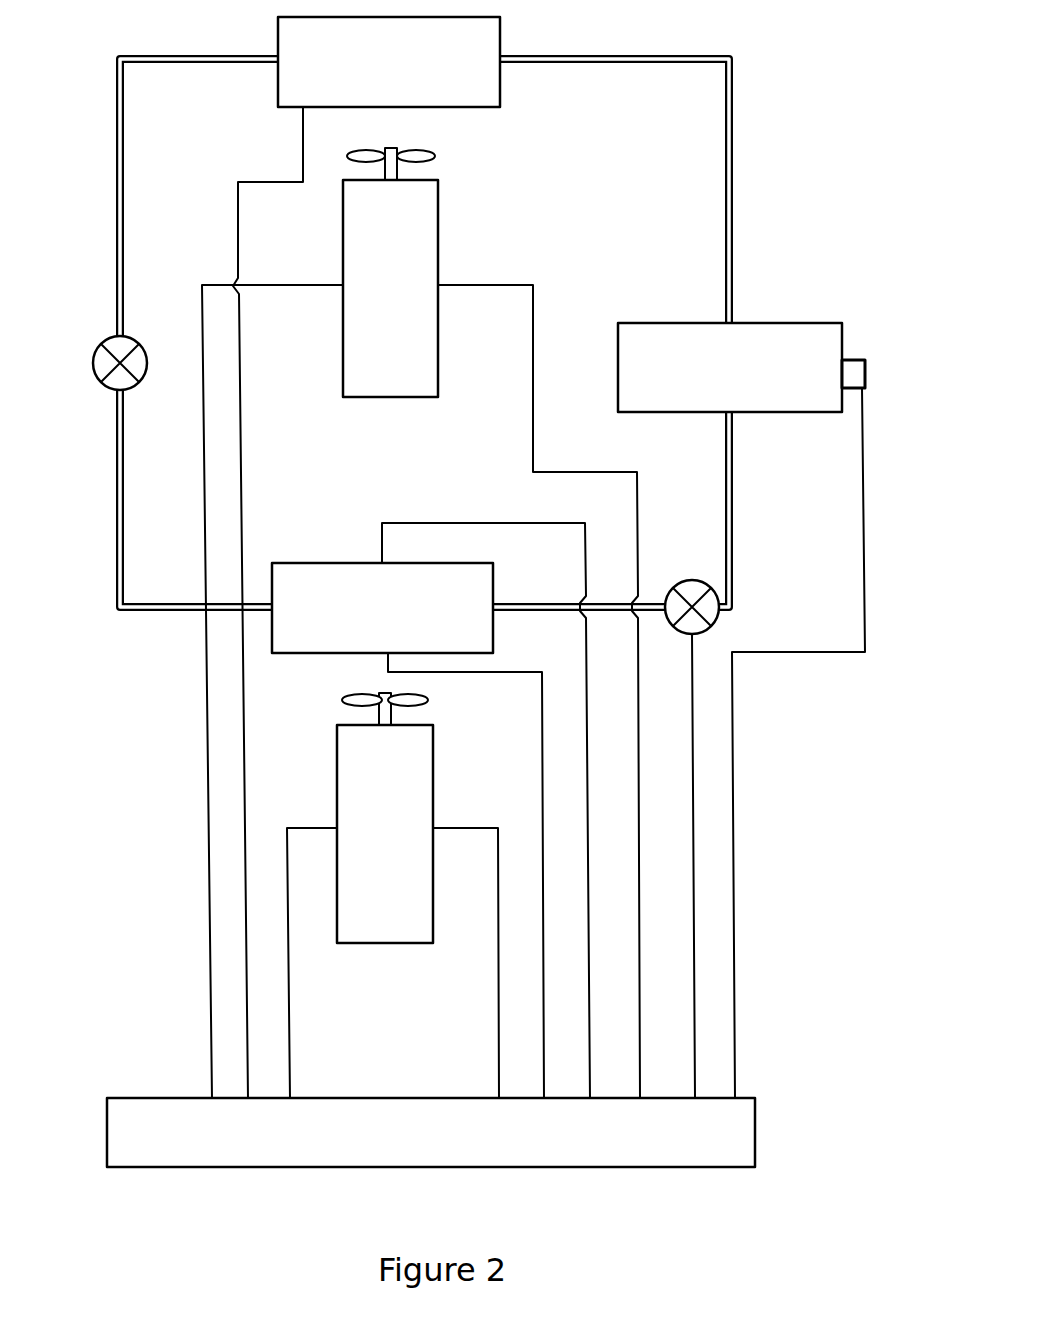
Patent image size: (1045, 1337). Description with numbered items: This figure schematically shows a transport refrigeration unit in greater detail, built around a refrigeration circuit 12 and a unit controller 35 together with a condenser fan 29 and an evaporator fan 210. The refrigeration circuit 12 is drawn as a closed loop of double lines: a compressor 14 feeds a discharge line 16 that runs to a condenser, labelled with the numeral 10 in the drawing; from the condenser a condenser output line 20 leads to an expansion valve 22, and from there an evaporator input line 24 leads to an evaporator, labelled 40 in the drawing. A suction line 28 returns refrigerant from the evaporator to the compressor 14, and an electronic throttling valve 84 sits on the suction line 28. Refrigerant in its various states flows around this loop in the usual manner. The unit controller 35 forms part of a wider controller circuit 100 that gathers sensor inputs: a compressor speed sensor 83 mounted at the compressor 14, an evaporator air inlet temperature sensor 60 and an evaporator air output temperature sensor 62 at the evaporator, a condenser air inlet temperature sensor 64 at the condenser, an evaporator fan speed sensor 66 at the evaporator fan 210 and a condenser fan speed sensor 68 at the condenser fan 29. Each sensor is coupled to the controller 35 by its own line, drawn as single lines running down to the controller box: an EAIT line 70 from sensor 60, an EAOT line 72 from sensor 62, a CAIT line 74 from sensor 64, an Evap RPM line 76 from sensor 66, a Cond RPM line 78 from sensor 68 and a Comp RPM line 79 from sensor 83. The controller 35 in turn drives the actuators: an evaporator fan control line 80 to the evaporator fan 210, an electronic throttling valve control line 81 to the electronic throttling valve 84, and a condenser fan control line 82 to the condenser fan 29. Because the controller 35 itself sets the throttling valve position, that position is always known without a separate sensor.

The condenser 10 is at (465, 30).
The refrigeration circuit 12 is at (752, 262).
The compressor 14 is at (780, 390).
The discharge line 16 is at (724, 182).
The condenser output line 20 is at (125, 207).
The expansion valve 22 is at (131, 341).
The evaporator input line 24 is at (125, 548).
The suction line 28 is at (735, 512).
The condenser fan 29 is at (408, 373).
The unit controller 35 is at (431, 1132).
The evaporator 40 is at (330, 562).
The evaporator air inlet temperature sensor 60 is at (375, 657).
The evaporator air output temperature sensor 62 is at (392, 558).
The condenser air inlet temperature sensor 64 is at (300, 112).
The evaporator fan speed sensor 66 is at (440, 822).
The condenser fan speed sensor 68 is at (442, 278).
The EAIT line 70 is at (537, 673).
The EAOT line 72 is at (470, 522).
The CAIT line 74 is at (240, 222).
The Evap RPM line 76 is at (497, 1015).
The Cond RPM line 78 is at (642, 1003).
The Comp RPM line 79 is at (735, 770).
The evaporator fan control line 80 is at (292, 1005).
The electronic throttling valve control line 81 is at (692, 840).
The condenser fan control line 82 is at (210, 993).
The compressor speed sensor 83 is at (866, 376).
The electronic throttling valve 84 is at (692, 578).
The controller circuit 100 is at (175, 795).
The evaporator fan 210 is at (406, 912).